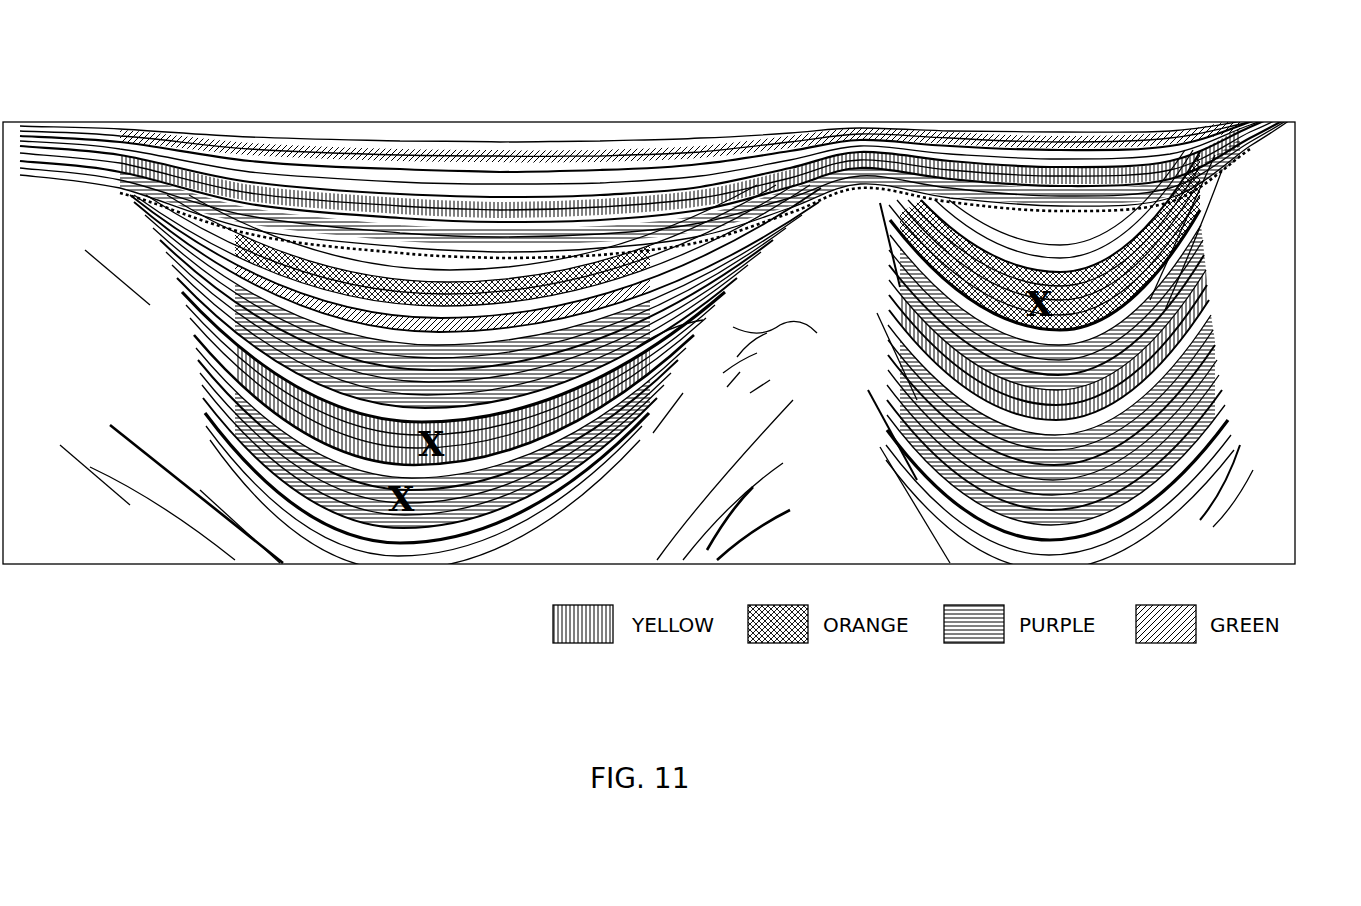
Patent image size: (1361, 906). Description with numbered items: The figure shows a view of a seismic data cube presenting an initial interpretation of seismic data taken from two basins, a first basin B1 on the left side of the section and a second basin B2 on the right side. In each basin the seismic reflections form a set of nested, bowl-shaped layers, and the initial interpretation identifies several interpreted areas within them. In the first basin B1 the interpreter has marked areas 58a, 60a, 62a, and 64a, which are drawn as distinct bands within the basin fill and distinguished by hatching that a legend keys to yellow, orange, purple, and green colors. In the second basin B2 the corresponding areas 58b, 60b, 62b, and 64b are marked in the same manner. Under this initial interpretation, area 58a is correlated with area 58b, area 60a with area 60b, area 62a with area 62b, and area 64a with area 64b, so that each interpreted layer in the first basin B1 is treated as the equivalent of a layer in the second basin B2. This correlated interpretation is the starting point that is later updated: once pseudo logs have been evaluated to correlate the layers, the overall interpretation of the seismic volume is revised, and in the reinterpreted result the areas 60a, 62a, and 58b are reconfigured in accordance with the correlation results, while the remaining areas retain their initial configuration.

The area 58a is at (450, 330).
The area 58b is at (1185, 210).
The area 60a is at (240, 345).
The area 60b is at (1218, 282).
The area 62a is at (505, 480).
The area 62b is at (1228, 335).
The area 64a is at (410, 538).
The area 64b is at (1228, 372).
The first basin B1 is at (362, 105).
The second basin B2 is at (1055, 105).